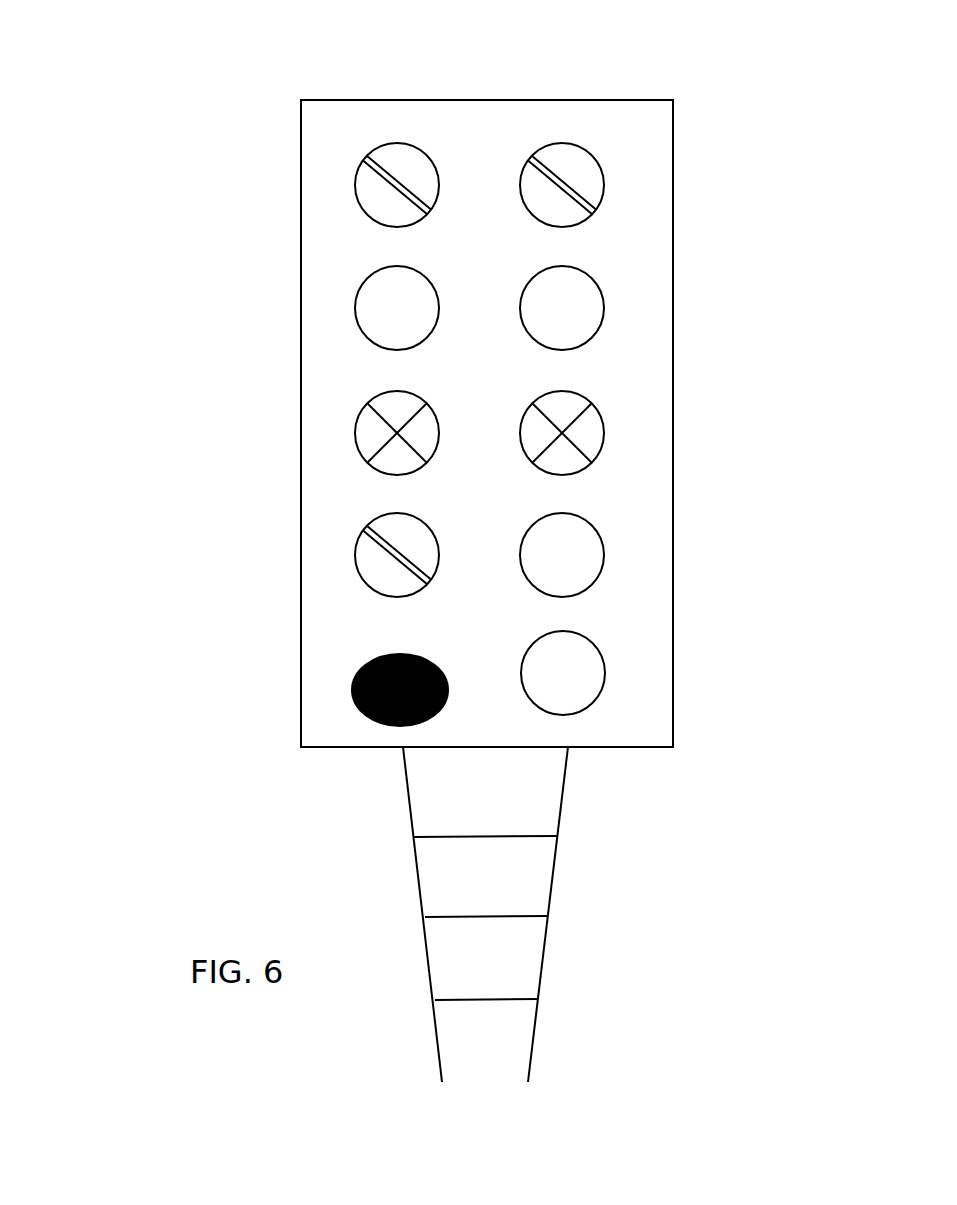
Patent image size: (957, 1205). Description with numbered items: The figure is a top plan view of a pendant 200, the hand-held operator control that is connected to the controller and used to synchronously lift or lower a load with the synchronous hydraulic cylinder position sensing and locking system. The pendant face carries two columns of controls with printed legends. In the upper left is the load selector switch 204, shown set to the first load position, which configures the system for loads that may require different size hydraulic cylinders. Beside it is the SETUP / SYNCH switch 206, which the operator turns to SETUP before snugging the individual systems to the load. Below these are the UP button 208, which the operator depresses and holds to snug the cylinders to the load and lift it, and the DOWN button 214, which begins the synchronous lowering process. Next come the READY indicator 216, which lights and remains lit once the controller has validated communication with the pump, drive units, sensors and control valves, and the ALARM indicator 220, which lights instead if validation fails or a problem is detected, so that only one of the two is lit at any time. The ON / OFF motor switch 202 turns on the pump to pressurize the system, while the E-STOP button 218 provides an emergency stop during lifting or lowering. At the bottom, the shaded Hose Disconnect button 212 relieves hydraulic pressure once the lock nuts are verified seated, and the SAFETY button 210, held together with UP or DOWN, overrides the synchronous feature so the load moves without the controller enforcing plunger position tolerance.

The pendant 200 is at (198, 124).
The switch 202 is at (377, 564).
The switch 204 is at (370, 195).
The switch 206 is at (592, 182).
The UP button 208 is at (372, 305).
The SAFETY button 210 is at (590, 676).
The Hose Disconnect button 212 is at (352, 694).
The DOWN button 214 is at (590, 308).
The READY indicator 216 is at (370, 433).
The E-STOP button 218 is at (584, 556).
The ALARM indicator 220 is at (590, 428).